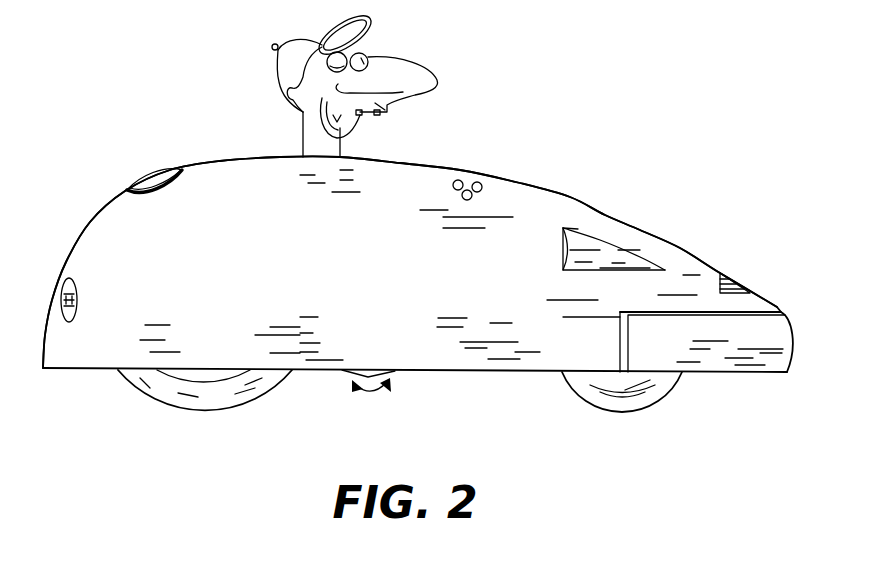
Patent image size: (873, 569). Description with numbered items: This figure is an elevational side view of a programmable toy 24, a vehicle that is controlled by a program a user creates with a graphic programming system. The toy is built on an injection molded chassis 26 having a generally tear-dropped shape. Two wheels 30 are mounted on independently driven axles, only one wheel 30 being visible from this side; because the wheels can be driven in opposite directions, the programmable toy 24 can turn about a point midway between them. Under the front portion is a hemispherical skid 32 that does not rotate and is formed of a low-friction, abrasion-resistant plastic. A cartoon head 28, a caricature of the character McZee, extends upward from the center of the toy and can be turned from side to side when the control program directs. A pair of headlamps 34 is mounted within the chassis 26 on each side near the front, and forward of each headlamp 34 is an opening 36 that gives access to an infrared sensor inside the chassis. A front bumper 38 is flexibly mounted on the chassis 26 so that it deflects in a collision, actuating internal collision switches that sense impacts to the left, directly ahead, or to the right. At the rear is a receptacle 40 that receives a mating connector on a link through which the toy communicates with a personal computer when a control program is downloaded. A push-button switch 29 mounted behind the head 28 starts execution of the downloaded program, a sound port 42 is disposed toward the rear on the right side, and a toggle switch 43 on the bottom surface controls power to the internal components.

The programmable toy 24 is at (84, 422).
The chassis 26 is at (118, 192).
The cartoon head 28 is at (302, 134).
The push-button switch 29 is at (160, 172).
The wheel 30 is at (263, 397).
The hemispherical skid 32 is at (567, 387).
The headlamp 34 is at (570, 227).
The opening 36 is at (722, 275).
The front bumper 38 is at (790, 328).
The receptacle 40 is at (62, 283).
The sound port 42 is at (458, 178).
The toggle switch 43 is at (342, 372).